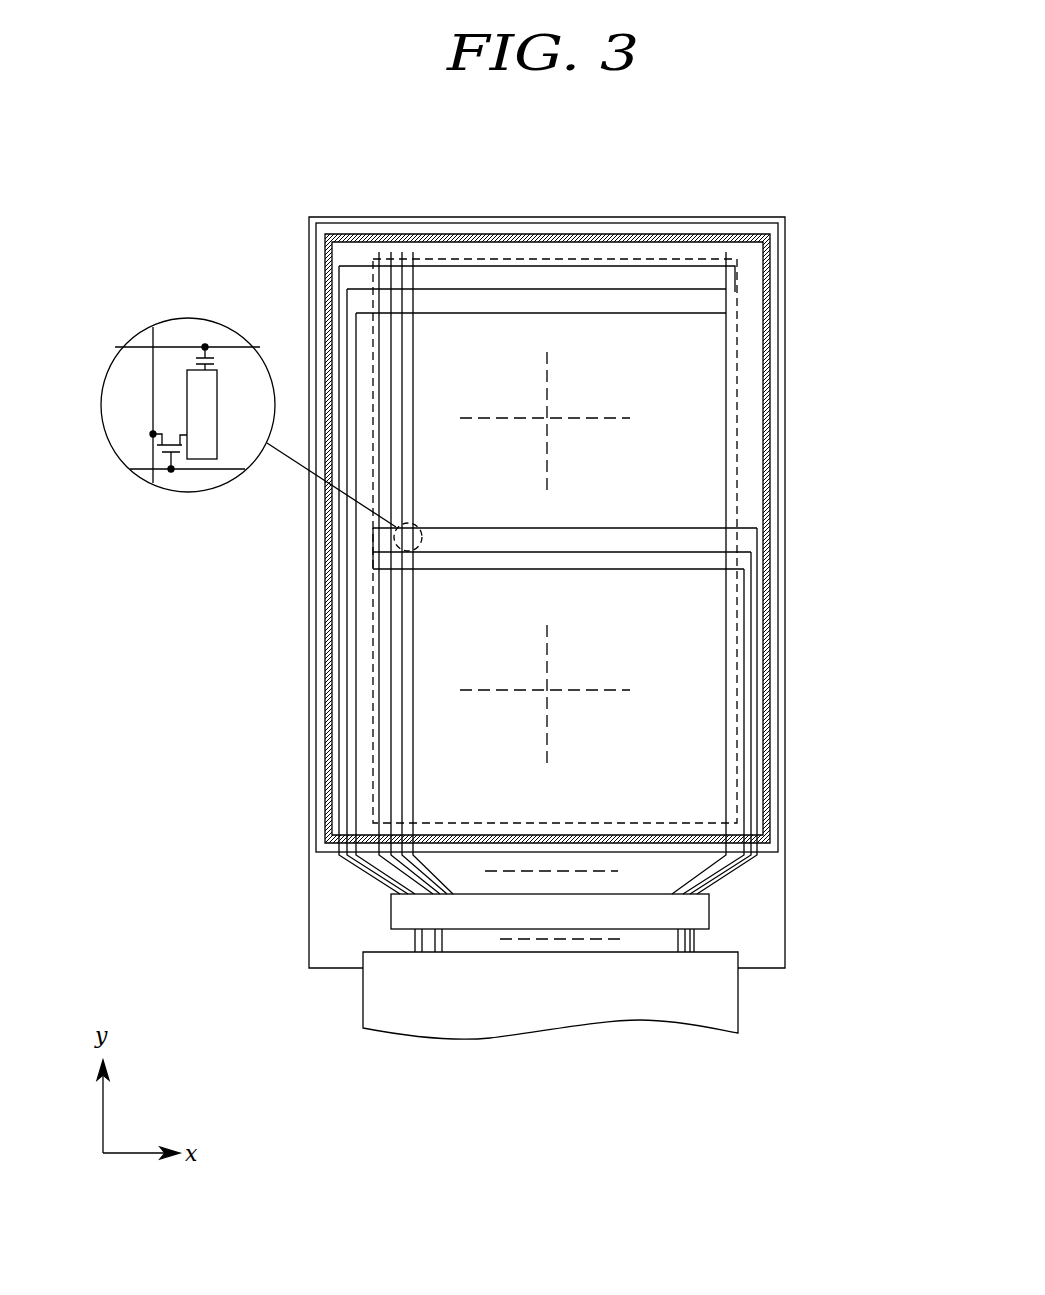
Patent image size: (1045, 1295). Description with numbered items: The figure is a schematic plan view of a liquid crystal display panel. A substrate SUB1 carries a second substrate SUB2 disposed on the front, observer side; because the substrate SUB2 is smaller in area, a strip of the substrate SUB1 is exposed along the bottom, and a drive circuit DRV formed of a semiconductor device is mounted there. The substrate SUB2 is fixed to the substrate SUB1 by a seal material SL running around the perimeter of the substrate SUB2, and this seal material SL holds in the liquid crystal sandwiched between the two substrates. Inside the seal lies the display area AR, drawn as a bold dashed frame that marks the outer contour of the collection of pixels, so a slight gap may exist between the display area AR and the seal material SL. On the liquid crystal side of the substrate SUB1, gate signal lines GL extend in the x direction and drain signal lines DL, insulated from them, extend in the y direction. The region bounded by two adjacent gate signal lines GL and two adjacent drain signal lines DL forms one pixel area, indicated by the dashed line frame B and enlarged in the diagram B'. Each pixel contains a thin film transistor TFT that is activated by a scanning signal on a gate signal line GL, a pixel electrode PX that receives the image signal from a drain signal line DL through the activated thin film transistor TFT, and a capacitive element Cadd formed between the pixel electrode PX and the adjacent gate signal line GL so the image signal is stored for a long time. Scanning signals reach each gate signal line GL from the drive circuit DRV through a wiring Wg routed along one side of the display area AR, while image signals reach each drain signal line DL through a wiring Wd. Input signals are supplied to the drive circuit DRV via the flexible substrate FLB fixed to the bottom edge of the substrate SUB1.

The substrate SUB1 is at (787, 808).
The substrate SUB2 is at (332, 855).
The seal material SL is at (768, 311).
The display area AR is at (737, 626).
The drain signal line DL is at (412, 353).
The gate signal line GL is at (543, 288).
The wiring Wg is at (347, 638).
The wiring Wd is at (385, 866).
The drive circuit DRV is at (703, 915).
The flexible substrate FLB is at (377, 996).
The dashed line frame B is at (417, 520).
The enlarged diagram B' is at (248, 410).
The capacitive element Cadd is at (205, 344).
The pixel electrode PX is at (190, 407).
The thin film transistor TFT is at (153, 453).